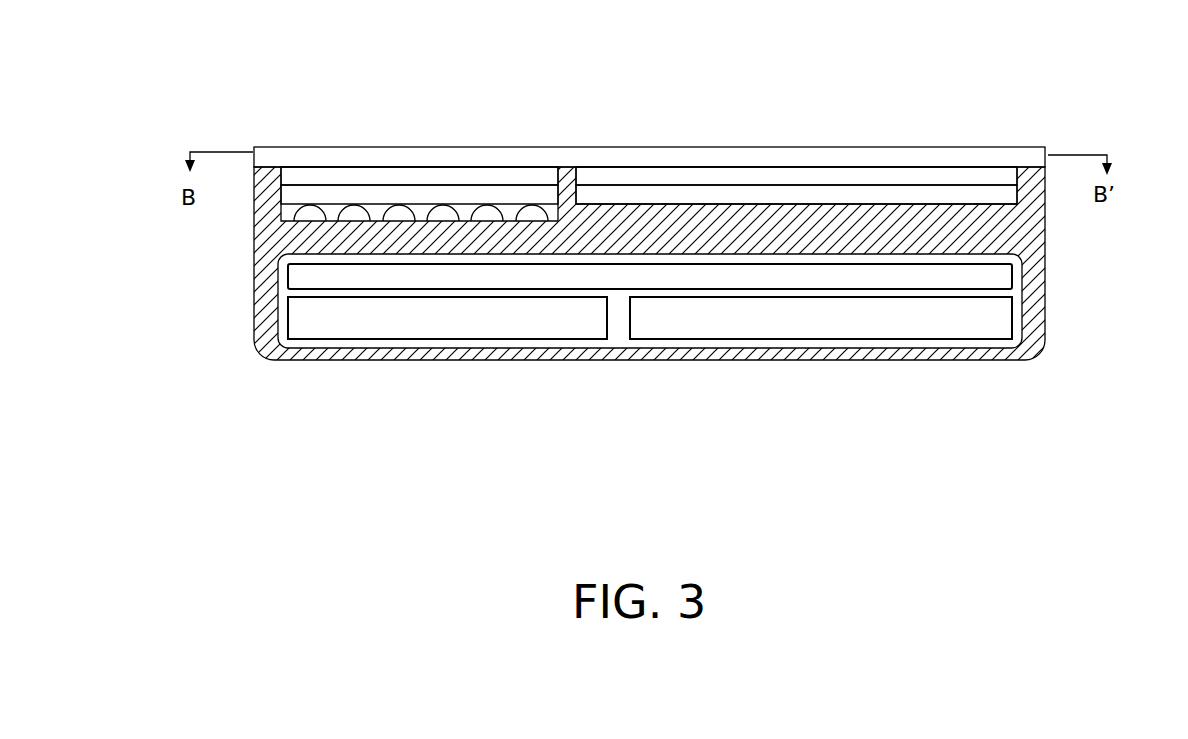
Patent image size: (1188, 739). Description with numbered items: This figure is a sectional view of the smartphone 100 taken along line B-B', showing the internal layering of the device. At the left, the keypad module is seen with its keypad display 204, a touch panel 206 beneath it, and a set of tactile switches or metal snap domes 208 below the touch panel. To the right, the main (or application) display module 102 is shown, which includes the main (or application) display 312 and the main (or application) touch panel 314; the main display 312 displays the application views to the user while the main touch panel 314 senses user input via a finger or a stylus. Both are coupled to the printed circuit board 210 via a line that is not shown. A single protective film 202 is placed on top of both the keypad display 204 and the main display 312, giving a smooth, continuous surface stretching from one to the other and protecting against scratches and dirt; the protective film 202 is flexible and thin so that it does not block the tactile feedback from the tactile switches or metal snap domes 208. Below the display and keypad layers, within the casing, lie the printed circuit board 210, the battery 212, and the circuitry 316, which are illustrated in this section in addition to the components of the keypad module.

The smartphone 100 is at (749, 124).
The main display module 102 is at (867, 128).
The protective film 202 is at (300, 157).
The keypad display 204 is at (453, 177).
The touch panel 206 is at (498, 195).
The tactile switches or metal snap domes 208 is at (397, 213).
The printed circuit board 210 is at (305, 274).
The battery 212 is at (407, 321).
The main display 312 is at (930, 180).
The main touch panel 314 is at (957, 200).
The circuitry 316 is at (885, 310).